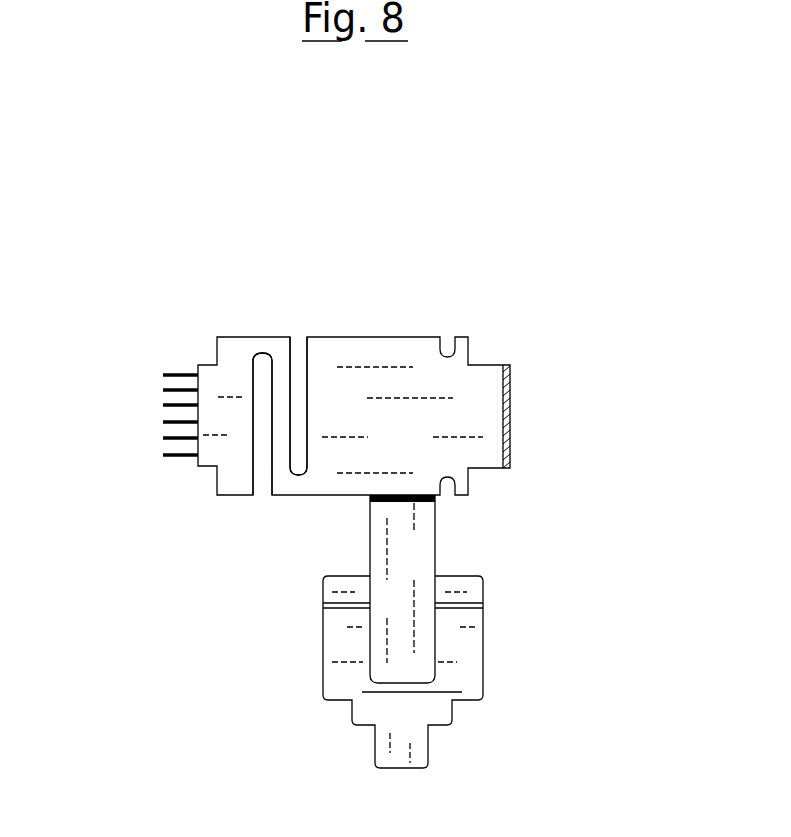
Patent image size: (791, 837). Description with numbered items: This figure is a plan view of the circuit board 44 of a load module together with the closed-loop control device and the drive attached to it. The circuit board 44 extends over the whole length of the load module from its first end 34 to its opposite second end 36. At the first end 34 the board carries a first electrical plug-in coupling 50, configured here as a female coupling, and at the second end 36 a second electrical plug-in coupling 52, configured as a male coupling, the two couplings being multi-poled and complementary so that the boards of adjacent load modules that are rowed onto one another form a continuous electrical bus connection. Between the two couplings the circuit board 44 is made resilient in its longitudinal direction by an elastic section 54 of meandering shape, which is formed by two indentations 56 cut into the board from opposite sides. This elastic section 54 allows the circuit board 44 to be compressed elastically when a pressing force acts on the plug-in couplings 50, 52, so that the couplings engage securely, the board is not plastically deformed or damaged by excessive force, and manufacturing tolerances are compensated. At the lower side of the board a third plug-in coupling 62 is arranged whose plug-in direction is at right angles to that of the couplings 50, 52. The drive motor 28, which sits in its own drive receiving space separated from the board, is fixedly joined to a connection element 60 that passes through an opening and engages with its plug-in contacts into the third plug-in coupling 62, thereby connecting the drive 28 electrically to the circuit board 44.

The drive motor 28 is at (468, 663).
The first end 34 is at (427, 425).
The second end 36 is at (148, 437).
The circuit board 44 is at (492, 395).
The first electrical plug-in coupling 50 is at (513, 452).
The second electrical plug-in coupling 52 is at (162, 405).
The elastic section 54 is at (312, 312).
The indentations 56 is at (297, 382).
The connection element 60 is at (422, 548).
The third plug-in coupling 62 is at (433, 500).